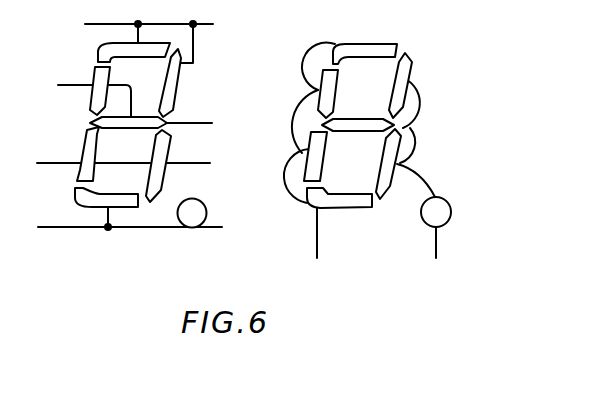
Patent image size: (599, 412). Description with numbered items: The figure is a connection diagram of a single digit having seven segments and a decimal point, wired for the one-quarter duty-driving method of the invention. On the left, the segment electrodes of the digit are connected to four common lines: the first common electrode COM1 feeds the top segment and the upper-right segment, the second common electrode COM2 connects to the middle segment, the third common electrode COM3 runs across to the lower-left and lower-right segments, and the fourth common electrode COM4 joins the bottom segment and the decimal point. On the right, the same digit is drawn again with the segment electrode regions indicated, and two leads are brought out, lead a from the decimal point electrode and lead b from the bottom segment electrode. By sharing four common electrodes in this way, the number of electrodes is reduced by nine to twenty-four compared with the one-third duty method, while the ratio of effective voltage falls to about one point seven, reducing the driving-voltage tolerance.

The first common electrode COM1 is at (181, 40).
The second common electrode COM2 is at (221, 126).
The third common electrode COM3 is at (155, 164).
The fourth common electrode COM4 is at (160, 219).
The decimal point electrode lead a is at (424, 224).
The bottom segment electrode lead b is at (339, 237).